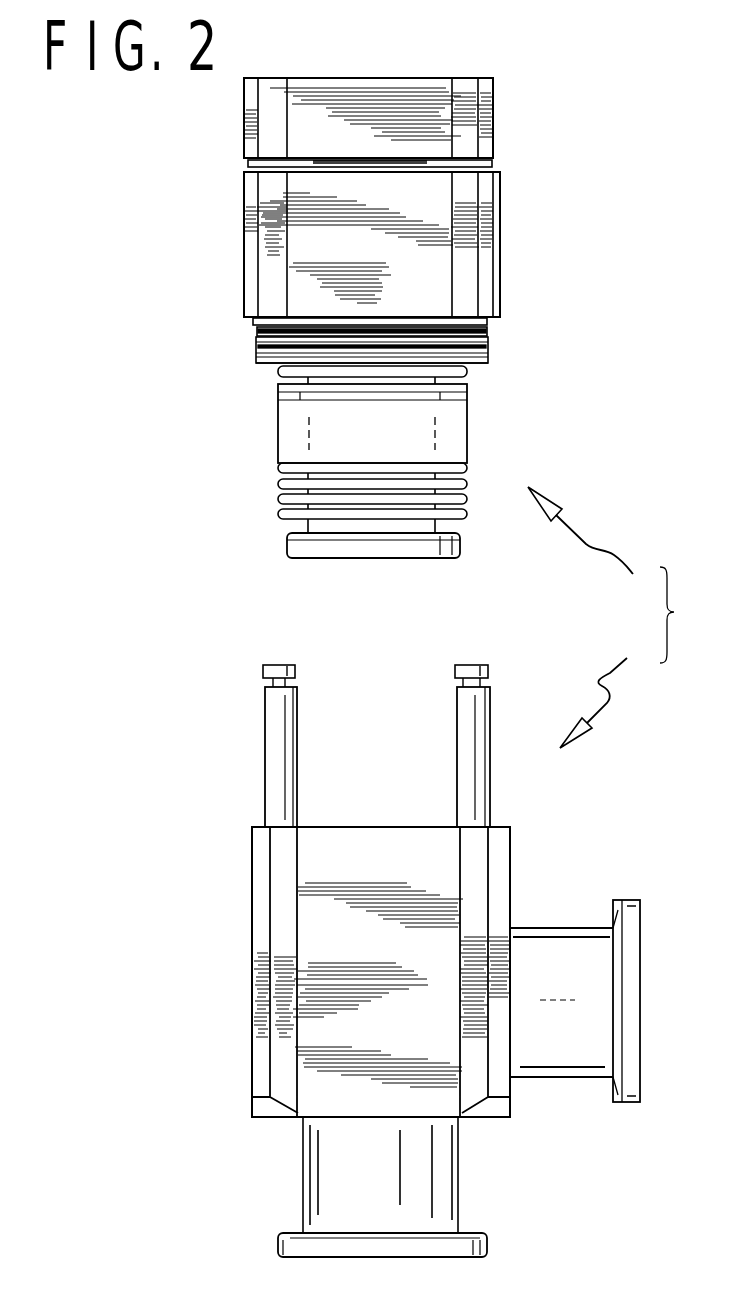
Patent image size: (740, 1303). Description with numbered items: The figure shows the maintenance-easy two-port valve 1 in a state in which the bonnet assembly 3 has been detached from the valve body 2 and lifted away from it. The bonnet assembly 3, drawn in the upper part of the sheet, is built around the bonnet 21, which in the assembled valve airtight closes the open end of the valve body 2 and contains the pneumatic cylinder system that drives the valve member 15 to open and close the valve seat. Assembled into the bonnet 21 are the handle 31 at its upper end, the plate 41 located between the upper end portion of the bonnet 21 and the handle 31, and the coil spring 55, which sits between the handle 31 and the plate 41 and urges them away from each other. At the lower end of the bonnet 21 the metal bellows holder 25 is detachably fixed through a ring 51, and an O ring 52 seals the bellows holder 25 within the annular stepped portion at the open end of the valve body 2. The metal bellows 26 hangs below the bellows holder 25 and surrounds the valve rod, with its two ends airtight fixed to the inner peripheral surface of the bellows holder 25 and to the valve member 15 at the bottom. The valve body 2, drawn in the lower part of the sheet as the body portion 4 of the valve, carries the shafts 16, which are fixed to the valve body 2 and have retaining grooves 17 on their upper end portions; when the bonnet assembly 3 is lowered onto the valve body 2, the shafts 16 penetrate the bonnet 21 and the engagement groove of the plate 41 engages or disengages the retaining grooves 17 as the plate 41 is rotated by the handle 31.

The maintenance-easy two-port valve 1 is at (679, 615).
The valve body 2 is at (603, 688).
The bonnet assembly 3 is at (589, 545).
The valve body 4 is at (446, 1042).
The valve member 15 is at (287, 547).
The shafts 16 is at (268, 707).
The retaining grooves 17 is at (263, 683).
The bonnet 21 is at (250, 268).
The bellows holder 25 is at (267, 364).
The bellows 26 is at (278, 483).
The handle 31 is at (250, 103).
The plate 41 is at (248, 174).
The ring 51 is at (258, 330).
The O ring 52 is at (488, 345).
The coil spring 55 is at (313, 160).